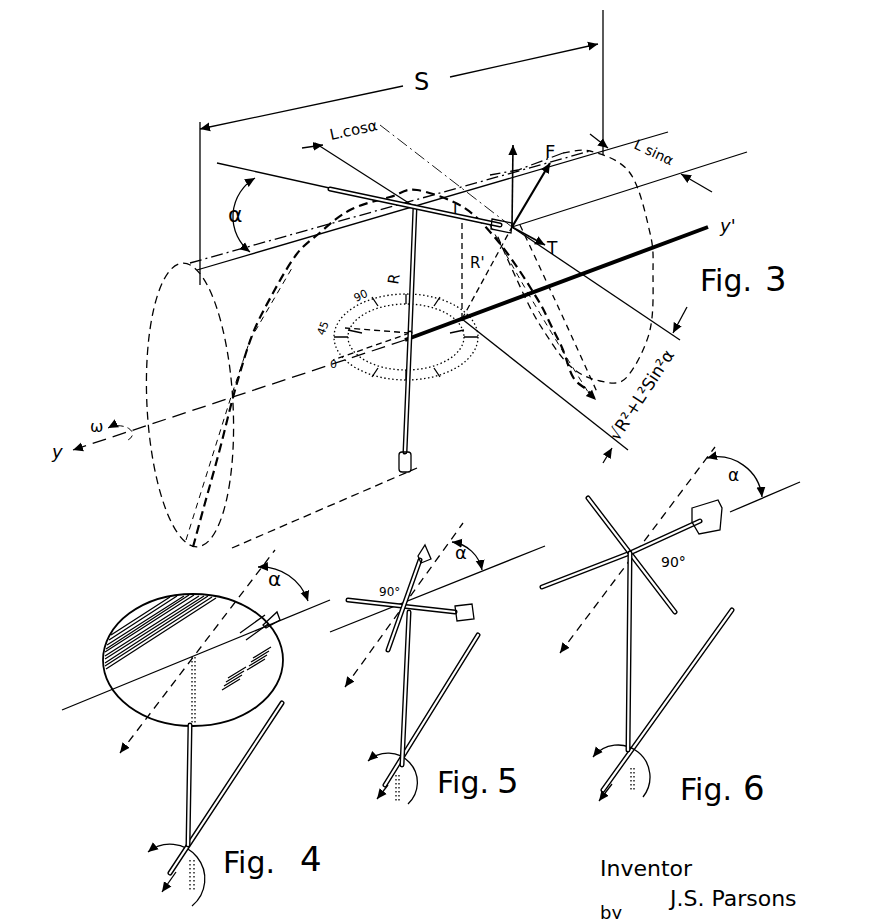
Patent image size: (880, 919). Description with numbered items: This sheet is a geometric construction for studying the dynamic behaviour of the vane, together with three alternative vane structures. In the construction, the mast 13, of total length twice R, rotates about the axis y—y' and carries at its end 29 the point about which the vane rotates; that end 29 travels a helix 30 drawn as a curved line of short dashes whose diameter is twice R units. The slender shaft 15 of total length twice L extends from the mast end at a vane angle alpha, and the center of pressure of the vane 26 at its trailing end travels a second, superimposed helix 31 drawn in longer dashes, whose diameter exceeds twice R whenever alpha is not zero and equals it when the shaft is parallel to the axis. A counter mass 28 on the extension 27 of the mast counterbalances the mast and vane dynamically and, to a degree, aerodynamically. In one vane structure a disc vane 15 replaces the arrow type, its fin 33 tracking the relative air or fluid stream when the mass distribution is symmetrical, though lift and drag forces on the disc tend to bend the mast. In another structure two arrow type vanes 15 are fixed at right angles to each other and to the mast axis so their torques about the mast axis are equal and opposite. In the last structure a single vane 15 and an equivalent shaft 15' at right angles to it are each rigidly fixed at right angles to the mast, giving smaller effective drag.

In FIG. 3, the mast 13 is at (409, 256).
In FIG. 4, the mast 13 is at (190, 755).
In FIG. 5, the mast 13 is at (403, 690).
In FIG. 6, the mast 13 is at (630, 652).
In FIG. 3, the vane shaft 15 is at (408, 194).
In FIG. 4, the vane shaft 15 is at (209, 660).
In FIG. 5, the vane shaft 15 is at (401, 597).
In FIG. 6, the vane shaft 15 is at (586, 559).
In FIG. 6, the equivalent shaft 15' is at (631, 555).
In FIG. 3, the center of pressure of the vane 26 is at (489, 274).
In FIG. 3, the extension 27 is at (405, 392).
In FIG. 3, the counter mass 28 is at (416, 452).
In FIG. 3, the end of the mast 29 is at (423, 203).
In FIG. 5, the end of the mast 29 is at (460, 610).
In FIG. 6, the end of the mast 29 is at (658, 532).
In FIG. 3, the helix 30 is at (556, 325).
In FIG. 3, the vane helix 31 is at (576, 333).
In FIG. 4, the fin 33 is at (277, 621).